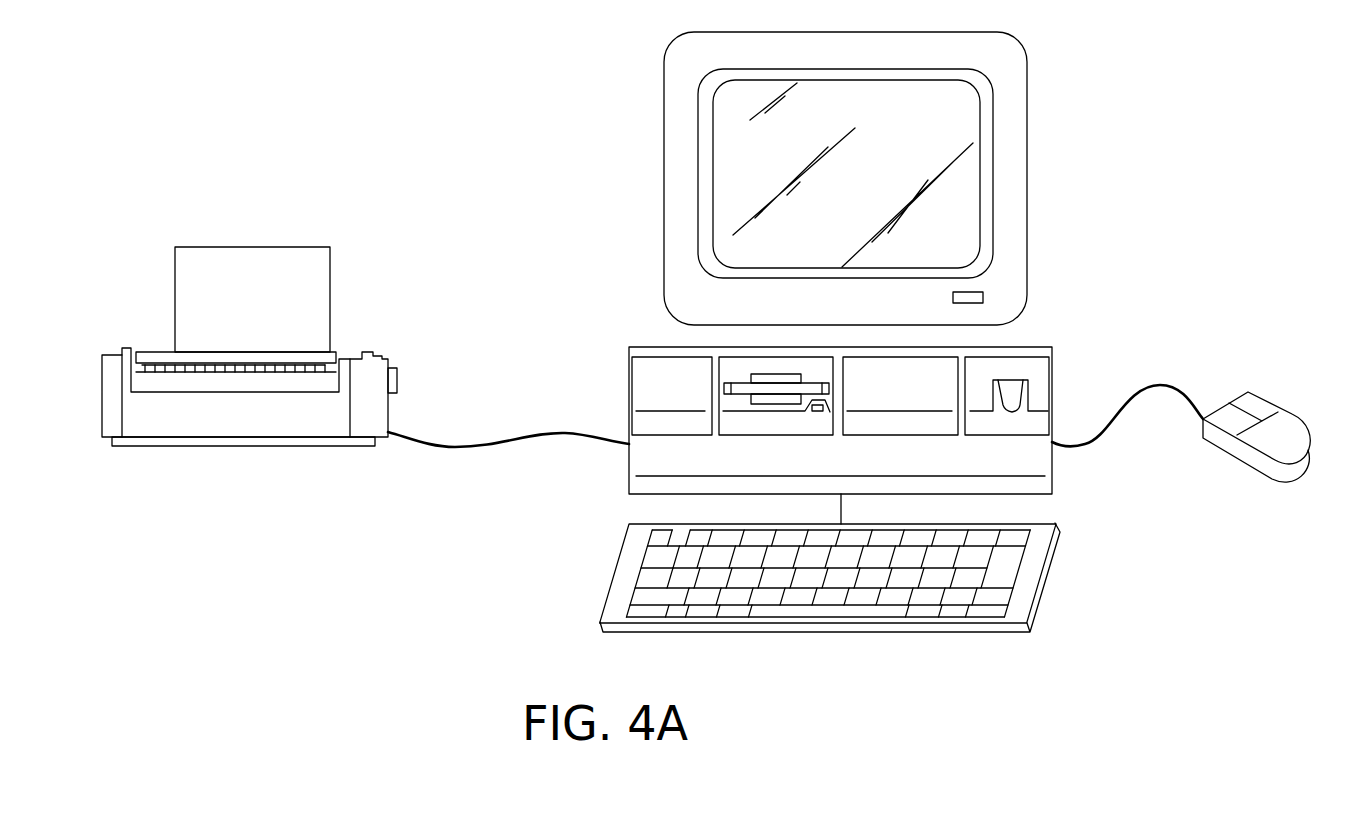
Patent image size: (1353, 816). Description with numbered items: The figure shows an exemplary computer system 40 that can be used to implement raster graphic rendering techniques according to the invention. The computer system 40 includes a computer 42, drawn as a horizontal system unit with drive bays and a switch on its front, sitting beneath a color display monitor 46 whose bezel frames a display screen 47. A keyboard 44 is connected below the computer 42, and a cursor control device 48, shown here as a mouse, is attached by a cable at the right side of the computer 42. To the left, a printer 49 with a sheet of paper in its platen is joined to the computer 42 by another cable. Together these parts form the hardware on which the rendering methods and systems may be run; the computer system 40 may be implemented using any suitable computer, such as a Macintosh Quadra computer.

The computer system 40 is at (1128, 313).
The computer 42 is at (1052, 462).
The keyboard 44 is at (1045, 588).
The color display monitor 46 is at (924, 178).
The display screen 47 is at (957, 138).
The cursor control device 48 is at (1243, 452).
The printer 49 is at (372, 380).